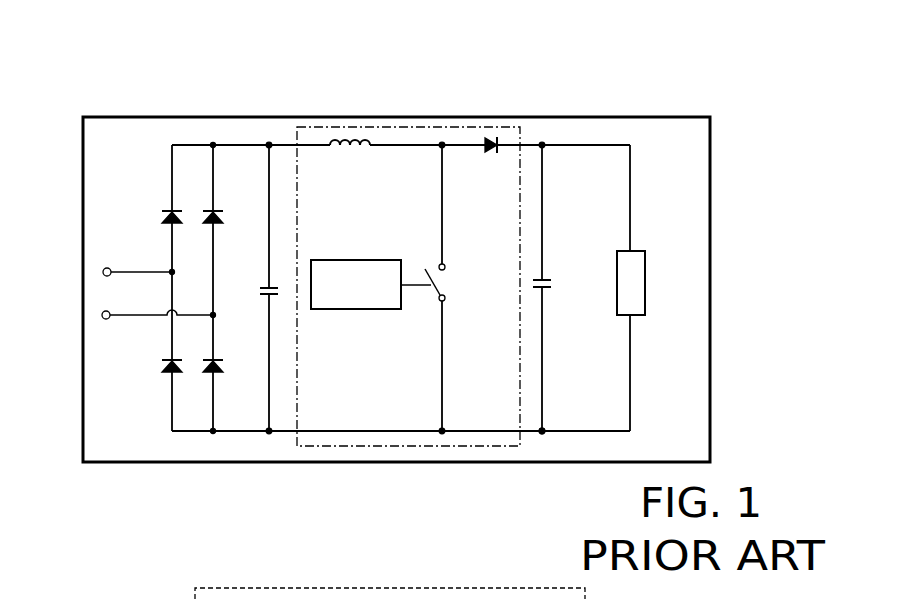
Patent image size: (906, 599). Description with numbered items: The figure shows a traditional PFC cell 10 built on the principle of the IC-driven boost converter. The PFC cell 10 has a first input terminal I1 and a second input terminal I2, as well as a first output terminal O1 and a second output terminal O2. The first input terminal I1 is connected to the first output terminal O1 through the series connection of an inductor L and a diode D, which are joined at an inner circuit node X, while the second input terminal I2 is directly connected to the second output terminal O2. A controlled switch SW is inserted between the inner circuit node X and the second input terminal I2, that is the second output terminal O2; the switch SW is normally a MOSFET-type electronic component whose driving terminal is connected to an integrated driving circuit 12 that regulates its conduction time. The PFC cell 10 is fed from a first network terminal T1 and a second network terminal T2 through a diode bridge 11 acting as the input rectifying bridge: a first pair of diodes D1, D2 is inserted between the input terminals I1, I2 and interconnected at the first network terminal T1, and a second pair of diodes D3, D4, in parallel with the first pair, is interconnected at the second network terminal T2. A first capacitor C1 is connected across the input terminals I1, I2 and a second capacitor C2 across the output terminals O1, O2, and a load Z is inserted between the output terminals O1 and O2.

The PFC cell 10 is at (407, 103).
The diode bridge 11 is at (172, 244).
The driving circuit 12 is at (364, 302).
The first network terminal T1 is at (103, 272).
The second network terminal T2 is at (102, 315).
The first input terminal I1 is at (269, 145).
The second input terminal I2 is at (269, 431).
The first output terminal O1 is at (542, 145).
The second output terminal O2 is at (542, 431).
The inner circuit node X is at (442, 145).
The first pair diode D1 is at (151, 210).
The first pair diode D2 is at (150, 378).
The second pair diode D3 is at (231, 210).
The second pair diode D4 is at (231, 378).
The first capacitor C1 is at (248, 288).
The second capacitor C2 is at (559, 289).
The inductor L is at (350, 158).
The diode D is at (486, 162).
The controlled switch SW is at (463, 289).
The load Z is at (650, 288).